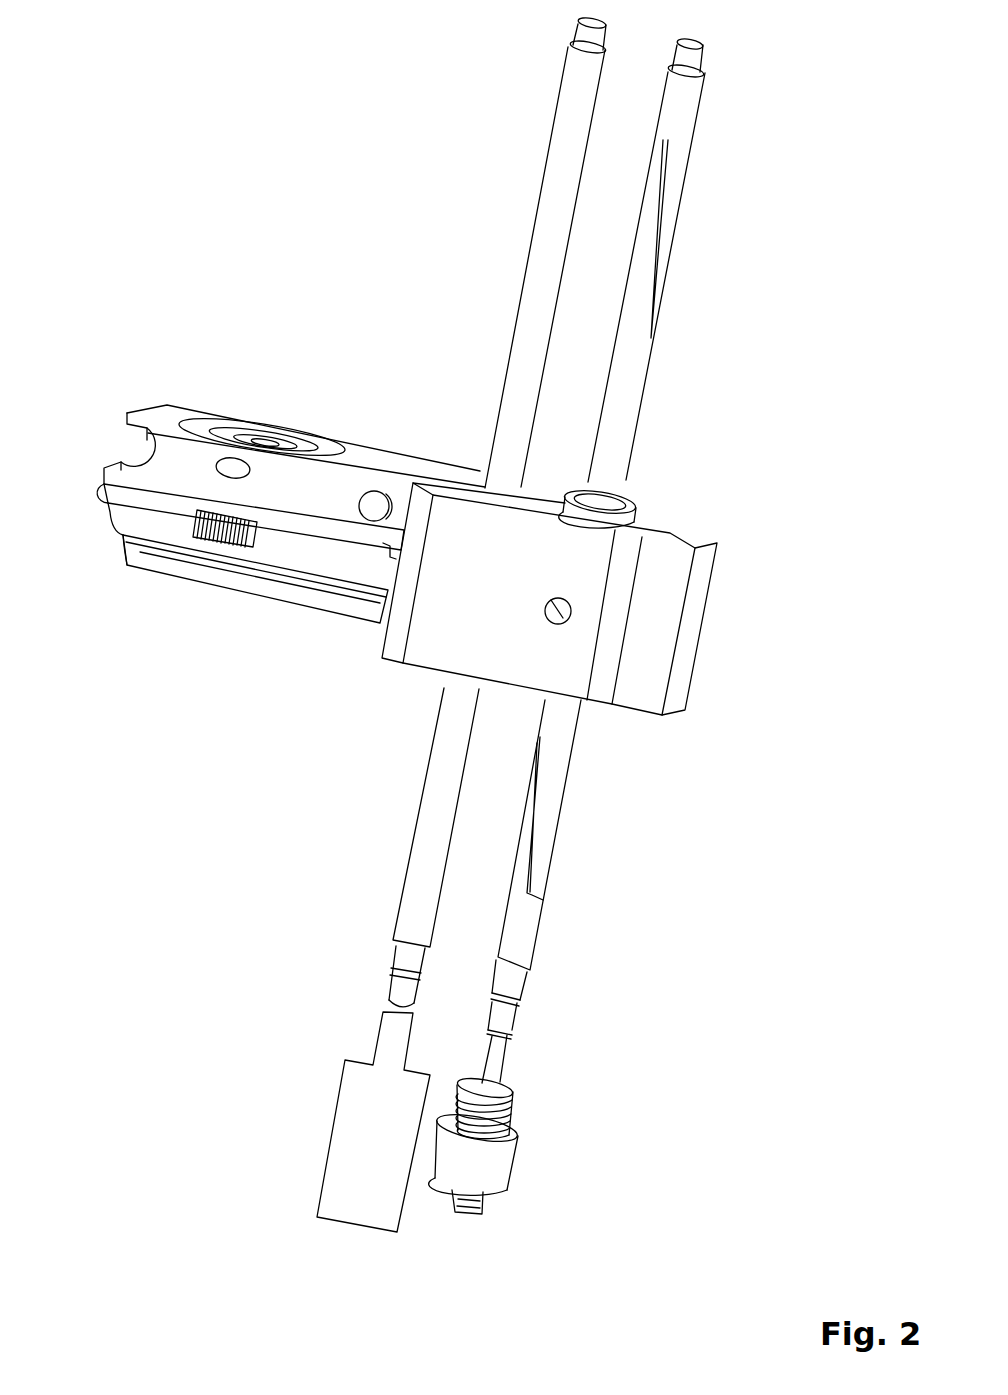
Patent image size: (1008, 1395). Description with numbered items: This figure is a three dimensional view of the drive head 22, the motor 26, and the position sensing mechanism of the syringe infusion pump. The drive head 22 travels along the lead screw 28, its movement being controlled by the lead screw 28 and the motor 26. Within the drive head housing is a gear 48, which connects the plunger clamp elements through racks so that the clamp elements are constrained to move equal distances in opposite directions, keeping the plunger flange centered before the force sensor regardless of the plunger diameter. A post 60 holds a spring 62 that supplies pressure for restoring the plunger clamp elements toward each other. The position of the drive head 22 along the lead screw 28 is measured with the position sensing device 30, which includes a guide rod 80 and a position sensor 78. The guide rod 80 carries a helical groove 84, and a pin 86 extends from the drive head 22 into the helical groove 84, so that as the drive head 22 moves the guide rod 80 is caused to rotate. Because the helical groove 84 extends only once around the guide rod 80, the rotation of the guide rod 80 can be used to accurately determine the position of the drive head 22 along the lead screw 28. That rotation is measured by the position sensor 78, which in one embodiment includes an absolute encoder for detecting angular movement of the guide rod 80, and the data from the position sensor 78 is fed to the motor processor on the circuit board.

The drive head 22 is at (717, 663).
The motor 26 is at (378, 1148).
The lead screw 28 is at (540, 327).
The position sensing device 30 is at (548, 1045).
The gear 48 is at (197, 533).
The post 60 is at (363, 505).
The spring 62 is at (375, 510).
The position sensor 78 is at (467, 1168).
The guide rod 80 is at (548, 822).
The helical groove 84 is at (543, 900).
The pin 86 is at (555, 612).